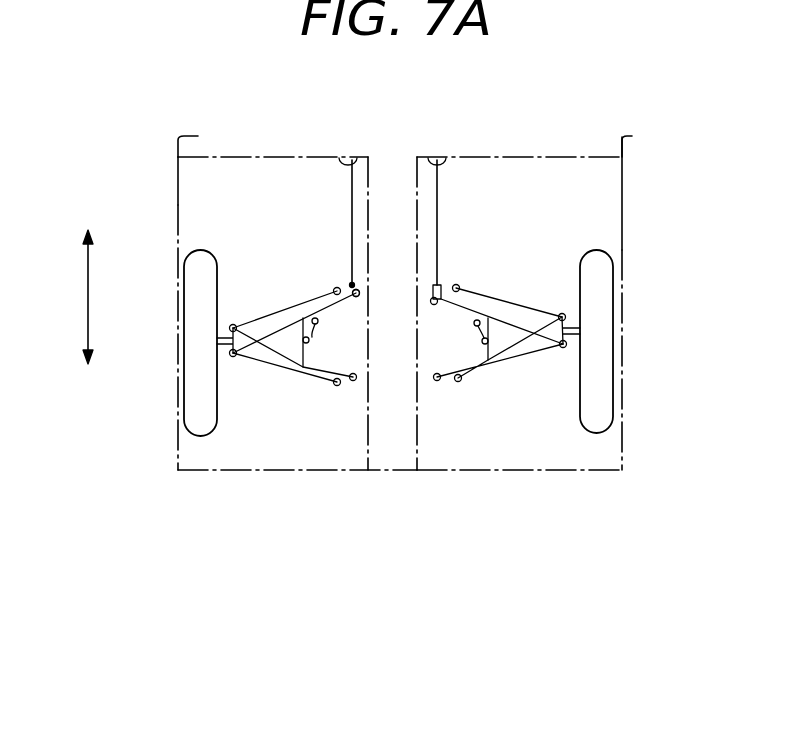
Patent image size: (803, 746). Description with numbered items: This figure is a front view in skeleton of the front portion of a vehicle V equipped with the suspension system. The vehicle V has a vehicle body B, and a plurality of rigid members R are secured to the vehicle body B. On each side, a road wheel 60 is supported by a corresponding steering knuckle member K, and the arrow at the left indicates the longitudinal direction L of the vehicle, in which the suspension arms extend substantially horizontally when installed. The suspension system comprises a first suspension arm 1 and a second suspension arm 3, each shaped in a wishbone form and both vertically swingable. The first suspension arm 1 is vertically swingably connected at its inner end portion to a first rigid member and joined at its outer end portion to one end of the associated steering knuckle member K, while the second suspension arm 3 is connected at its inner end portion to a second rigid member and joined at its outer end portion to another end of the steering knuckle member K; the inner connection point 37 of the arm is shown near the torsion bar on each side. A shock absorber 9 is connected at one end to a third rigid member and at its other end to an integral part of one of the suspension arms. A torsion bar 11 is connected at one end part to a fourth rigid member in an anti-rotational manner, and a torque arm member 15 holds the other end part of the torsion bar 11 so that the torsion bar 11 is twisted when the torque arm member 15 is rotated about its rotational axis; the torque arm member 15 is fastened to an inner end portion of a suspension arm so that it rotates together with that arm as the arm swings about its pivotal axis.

The vehicle V is at (168, 131).
The vehicle body B is at (418, 446).
The rigid member R is at (346, 160).
The torsion bar 11 is at (350, 186).
The torque arm member 15 is at (351, 283).
The upper arm inner joint 37 is at (358, 289).
The first suspension arm 1 is at (285, 308).
The second suspension arm 3 is at (289, 375).
The shock absorber 9 is at (312, 337).
The steering knuckle member K is at (230, 345).
The road wheel 60 is at (183, 300).
The longitudinal direction L is at (86, 290).